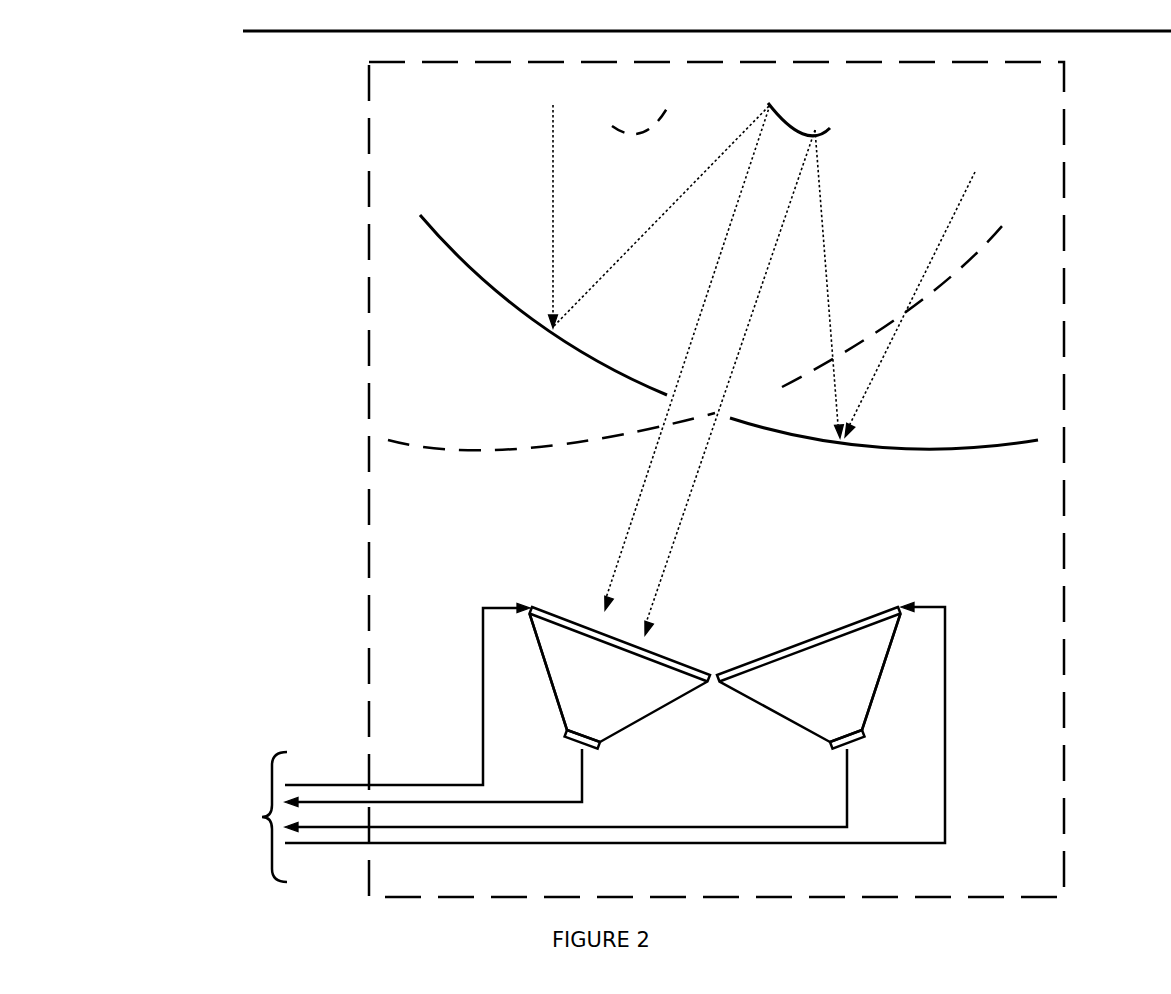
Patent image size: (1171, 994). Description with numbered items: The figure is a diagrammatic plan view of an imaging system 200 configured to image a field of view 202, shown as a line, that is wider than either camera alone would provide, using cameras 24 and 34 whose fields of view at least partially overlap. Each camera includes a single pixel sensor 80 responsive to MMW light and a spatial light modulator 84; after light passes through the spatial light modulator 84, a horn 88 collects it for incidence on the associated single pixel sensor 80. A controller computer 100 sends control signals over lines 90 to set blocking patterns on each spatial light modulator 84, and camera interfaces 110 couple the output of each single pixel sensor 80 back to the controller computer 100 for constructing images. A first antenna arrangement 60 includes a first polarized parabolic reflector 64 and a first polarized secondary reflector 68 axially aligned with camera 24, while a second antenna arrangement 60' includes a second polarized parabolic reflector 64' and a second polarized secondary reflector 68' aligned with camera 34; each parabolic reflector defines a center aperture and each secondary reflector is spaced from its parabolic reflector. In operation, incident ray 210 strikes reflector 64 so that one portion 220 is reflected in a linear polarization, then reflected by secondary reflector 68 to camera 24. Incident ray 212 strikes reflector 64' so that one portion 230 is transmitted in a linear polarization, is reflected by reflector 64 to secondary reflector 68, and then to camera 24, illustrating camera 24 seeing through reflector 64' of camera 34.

The imaging system 200 is at (1092, 128).
The field of view 202 is at (344, 31).
The camera 24 is at (661, 721).
The camera 34 is at (891, 699).
The first antenna arrangement 60 is at (466, 302).
The second antenna arrangement 60' is at (458, 482).
The first polarized parabolic reflector 64 is at (729, 310).
The second polarized parabolic reflector 64' is at (695, 337).
The first polarized secondary reflector 68 is at (774, 117).
The second polarized secondary reflector 68' is at (630, 110).
The single pixel sensor 80 is at (566, 738).
The spatial light modulator 84 is at (556, 615).
The horn 88 is at (547, 670).
The control signal lines 90 is at (393, 785).
The controller computer 100 is at (219, 817).
The camera interfaces 110 is at (503, 801).
The incident ray 210 is at (557, 201).
The incident ray 212 is at (939, 252).
The reflected portion 220 is at (625, 261).
The transmitted portion 230 is at (832, 344).